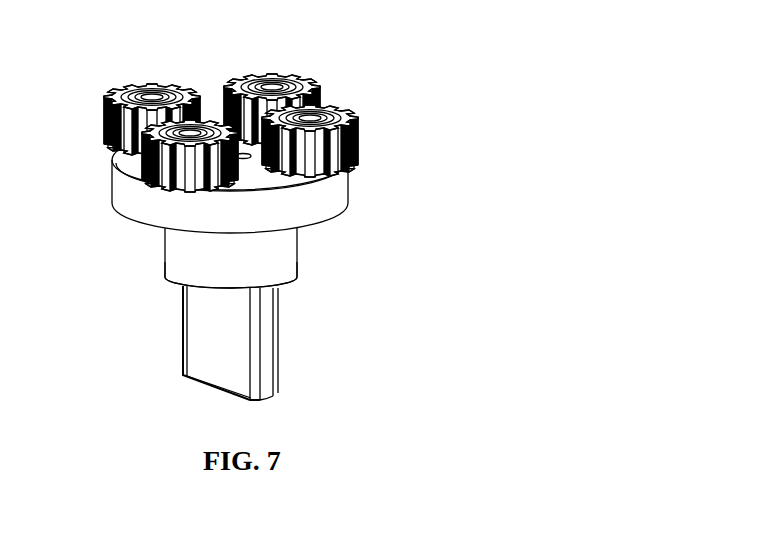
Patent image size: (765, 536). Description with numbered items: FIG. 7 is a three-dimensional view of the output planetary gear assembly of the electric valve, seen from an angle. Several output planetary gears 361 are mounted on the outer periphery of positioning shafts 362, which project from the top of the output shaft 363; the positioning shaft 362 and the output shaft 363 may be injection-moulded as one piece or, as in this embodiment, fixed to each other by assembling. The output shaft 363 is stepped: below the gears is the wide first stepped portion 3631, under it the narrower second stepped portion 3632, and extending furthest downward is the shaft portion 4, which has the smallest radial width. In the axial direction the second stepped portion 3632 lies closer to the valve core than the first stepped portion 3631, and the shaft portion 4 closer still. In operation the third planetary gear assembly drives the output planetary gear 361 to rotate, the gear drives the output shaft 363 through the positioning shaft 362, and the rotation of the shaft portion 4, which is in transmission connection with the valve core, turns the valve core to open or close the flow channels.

The output planetary gear 361 is at (254, 102).
The positioning shaft 362 is at (270, 85).
The output shaft 363 is at (245, 271).
The first stepped portion 3631 is at (183, 229).
The second stepped portion 3632 is at (185, 283).
The shaft portion 4 is at (232, 350).